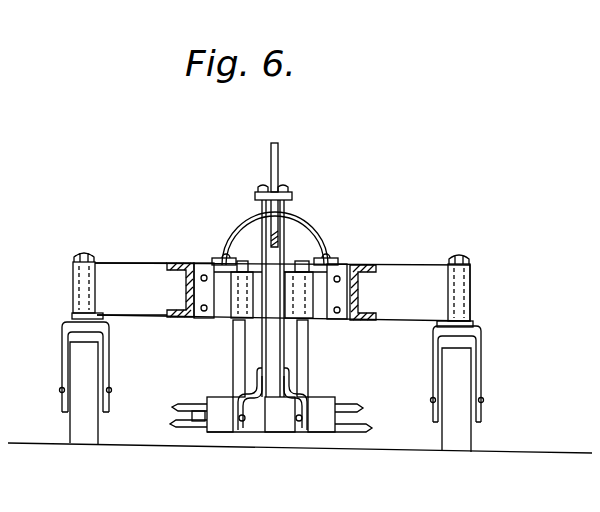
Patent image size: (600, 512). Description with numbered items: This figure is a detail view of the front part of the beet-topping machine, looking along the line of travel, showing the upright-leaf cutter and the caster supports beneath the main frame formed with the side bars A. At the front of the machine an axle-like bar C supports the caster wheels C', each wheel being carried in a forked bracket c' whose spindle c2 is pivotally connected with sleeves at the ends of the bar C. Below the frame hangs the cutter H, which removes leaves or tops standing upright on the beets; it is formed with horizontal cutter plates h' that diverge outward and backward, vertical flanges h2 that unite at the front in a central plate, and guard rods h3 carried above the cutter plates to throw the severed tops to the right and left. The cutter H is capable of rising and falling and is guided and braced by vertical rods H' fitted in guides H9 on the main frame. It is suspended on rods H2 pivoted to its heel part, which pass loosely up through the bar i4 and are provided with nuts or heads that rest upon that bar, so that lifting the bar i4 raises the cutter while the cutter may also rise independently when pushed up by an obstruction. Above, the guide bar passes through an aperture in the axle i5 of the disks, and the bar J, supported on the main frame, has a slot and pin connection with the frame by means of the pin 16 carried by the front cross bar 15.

The pin 16 is at (273, 166).
The bar J is at (255, 278).
The bar i4 is at (289, 192).
The axle i5 is at (272, 232).
The front cross bar 15 is at (323, 245).
The guides H9 is at (303, 292).
The side bars A is at (410, 253).
The spindle c2 is at (87, 248).
The axle-like bar C is at (131, 273).
The forked bracket c' is at (66, 367).
The caster wheels C' is at (57, 393).
The vertical rods H' is at (279, 358).
The rods H2 is at (332, 365).
The cutter H is at (300, 403).
The vertical flanges h2 is at (320, 395).
The horizontal cutter plates h' is at (173, 445).
The guard rods h3 is at (195, 412).